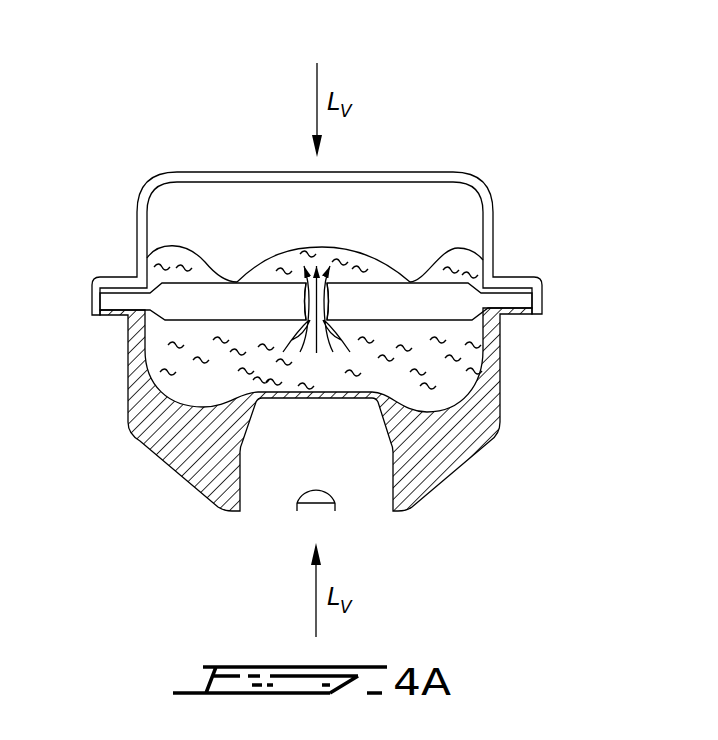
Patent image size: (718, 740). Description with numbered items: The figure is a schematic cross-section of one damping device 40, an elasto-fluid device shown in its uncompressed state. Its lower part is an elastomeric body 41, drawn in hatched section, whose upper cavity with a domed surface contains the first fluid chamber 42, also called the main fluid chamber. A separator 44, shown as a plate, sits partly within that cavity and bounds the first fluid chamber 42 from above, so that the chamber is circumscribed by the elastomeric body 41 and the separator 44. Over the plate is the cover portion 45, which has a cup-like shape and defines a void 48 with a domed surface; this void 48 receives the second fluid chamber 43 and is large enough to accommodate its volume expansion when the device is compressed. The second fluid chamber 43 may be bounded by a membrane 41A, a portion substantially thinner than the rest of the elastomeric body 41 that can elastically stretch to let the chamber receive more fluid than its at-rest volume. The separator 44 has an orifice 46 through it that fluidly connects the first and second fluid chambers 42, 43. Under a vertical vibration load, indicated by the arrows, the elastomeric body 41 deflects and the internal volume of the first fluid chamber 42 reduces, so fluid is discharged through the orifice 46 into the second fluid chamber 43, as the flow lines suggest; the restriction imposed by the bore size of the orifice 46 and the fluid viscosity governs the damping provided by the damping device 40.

The damping device 40 is at (345, 263).
The elastomeric body 41 is at (502, 400).
The membrane 41A is at (300, 246).
The first fluid chamber 42 is at (180, 368).
The second fluid chamber 43 is at (283, 264).
The separator 44 is at (443, 305).
The cover portion 45 is at (483, 186).
The orifice 46 is at (311, 303).
The void 48 is at (416, 201).